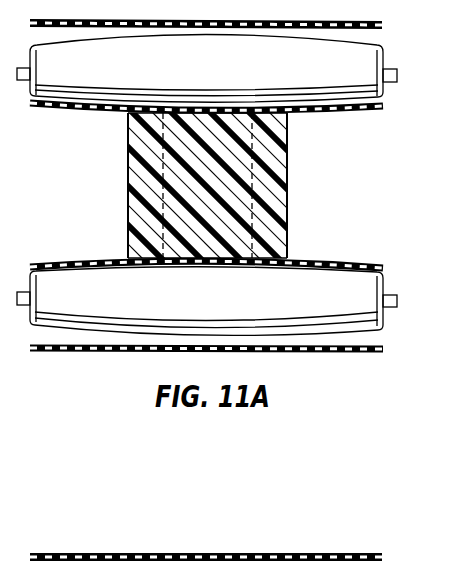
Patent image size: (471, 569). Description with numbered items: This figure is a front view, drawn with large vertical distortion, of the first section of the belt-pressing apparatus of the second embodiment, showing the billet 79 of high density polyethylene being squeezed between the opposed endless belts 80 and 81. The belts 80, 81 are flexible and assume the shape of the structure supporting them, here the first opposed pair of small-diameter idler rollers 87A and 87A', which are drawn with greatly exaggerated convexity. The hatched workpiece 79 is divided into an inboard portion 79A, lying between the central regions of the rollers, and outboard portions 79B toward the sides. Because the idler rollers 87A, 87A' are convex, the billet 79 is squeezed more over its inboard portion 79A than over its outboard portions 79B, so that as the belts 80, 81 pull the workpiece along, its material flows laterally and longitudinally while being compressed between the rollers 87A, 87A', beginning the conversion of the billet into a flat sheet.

The billet 79 is at (218, 190).
The inboard portions 79A is at (188, 183).
The outboard portions 79B is at (138, 218).
The endless belt 80 is at (355, 263).
The endless belt 81 is at (377, 32).
The idler roller 87A is at (207, 69).
The idler roller 87A' is at (207, 301).